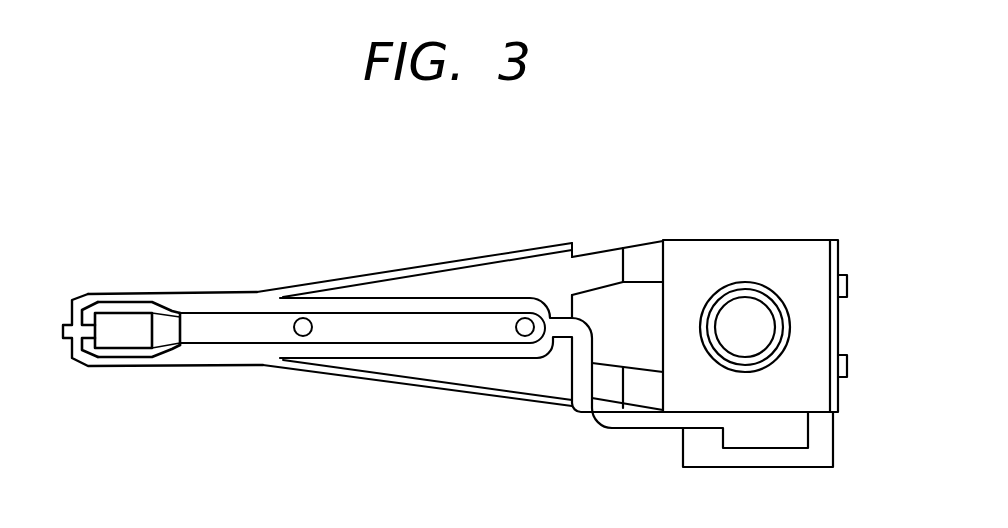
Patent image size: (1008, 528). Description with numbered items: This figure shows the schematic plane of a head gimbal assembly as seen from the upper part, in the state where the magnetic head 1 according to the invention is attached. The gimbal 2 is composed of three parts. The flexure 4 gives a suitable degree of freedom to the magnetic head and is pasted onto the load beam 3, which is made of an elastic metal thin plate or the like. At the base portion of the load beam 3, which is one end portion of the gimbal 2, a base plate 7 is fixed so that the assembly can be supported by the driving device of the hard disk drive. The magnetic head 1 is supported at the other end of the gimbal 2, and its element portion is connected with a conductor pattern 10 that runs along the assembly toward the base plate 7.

The magnetic head 1 is at (122, 338).
The gimbal 2 is at (513, 213).
The load beam 3 is at (450, 380).
The flexure 4 is at (228, 335).
The base plate 7 is at (787, 250).
The conductor pattern 10 is at (412, 325).